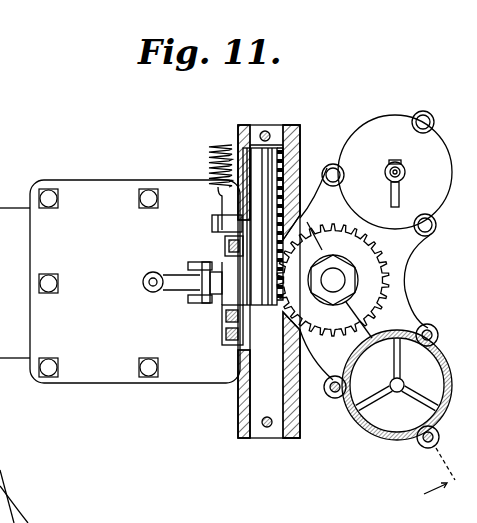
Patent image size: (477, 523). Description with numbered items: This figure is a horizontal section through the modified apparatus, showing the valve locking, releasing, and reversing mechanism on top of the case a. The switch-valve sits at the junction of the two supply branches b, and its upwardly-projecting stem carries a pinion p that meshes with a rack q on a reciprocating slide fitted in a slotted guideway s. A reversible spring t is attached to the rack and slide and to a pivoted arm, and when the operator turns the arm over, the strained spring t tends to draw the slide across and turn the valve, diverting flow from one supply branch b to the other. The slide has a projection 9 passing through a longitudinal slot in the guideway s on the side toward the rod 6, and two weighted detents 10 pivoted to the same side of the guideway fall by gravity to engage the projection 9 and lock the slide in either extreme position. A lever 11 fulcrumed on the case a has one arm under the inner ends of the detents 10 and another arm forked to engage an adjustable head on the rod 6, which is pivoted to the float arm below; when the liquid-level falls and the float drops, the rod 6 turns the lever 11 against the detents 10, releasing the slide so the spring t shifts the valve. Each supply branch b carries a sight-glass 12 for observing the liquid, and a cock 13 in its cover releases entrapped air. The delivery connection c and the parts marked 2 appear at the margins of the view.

The case a is at (120, 281).
The supply connection branch b is at (376, 281).
The delivery connection c is at (381, 352).
The pinion p is at (333, 280).
The rack q is at (298, 155).
The slotted guideway s is at (240, 405).
The spring t is at (207, 164).
The arc member 2 is at (32, 496).
The rod 6 is at (147, 278).
The projection 9 is at (218, 229).
The detents 10 is at (226, 250).
The lever 11 is at (178, 290).
The sight-glass 12 is at (350, 406).
The cock 13 is at (413, 183).